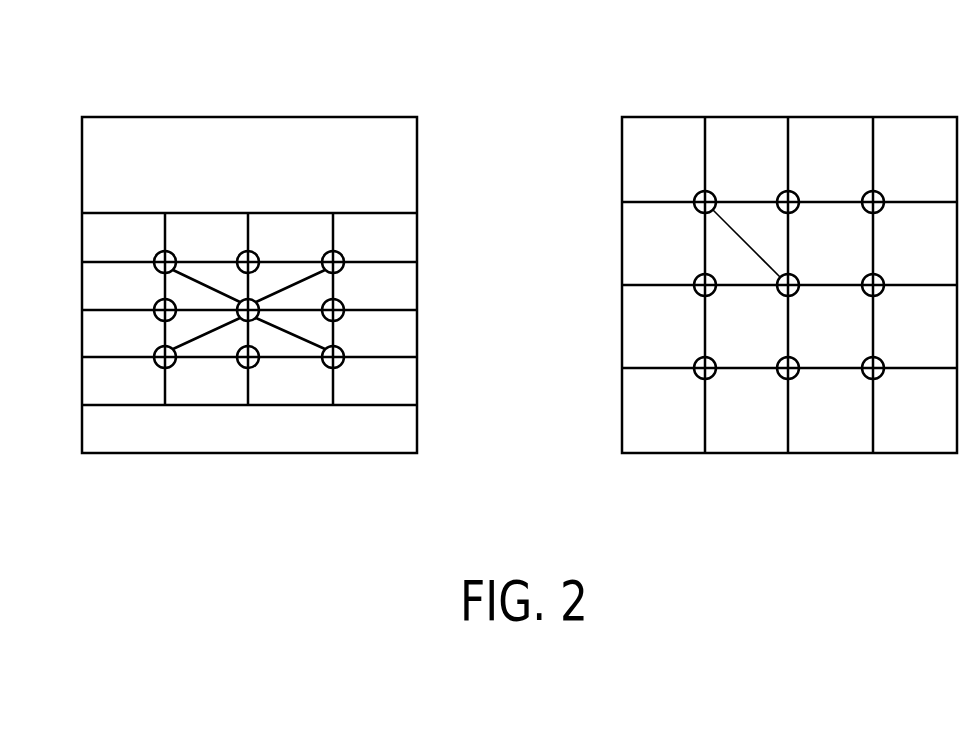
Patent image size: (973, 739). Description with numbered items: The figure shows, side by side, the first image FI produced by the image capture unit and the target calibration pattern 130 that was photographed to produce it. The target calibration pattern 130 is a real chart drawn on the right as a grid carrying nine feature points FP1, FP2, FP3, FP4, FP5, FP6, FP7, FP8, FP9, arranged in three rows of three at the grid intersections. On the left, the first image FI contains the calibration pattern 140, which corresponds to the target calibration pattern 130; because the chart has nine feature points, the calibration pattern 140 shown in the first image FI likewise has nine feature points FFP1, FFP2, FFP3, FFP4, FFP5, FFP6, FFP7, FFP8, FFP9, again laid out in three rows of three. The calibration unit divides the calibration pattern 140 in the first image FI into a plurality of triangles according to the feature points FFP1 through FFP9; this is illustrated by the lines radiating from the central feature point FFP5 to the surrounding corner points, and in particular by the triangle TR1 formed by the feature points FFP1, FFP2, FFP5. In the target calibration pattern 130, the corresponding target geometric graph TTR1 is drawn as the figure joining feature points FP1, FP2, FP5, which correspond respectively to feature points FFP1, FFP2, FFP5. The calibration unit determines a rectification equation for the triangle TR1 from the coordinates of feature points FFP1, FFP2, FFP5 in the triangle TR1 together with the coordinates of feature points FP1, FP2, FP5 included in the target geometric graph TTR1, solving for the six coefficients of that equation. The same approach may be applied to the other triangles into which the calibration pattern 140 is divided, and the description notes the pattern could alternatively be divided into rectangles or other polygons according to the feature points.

The first image FI is at (263, 118).
The calibration pattern 140 is at (308, 213).
The triangle TR1 is at (217, 275).
The target calibration pattern 130 is at (820, 117).
The target geometric graph TTR1 is at (745, 212).
The feature point FFP1 is at (138, 247).
The feature point FFP2 is at (278, 247).
The feature point FFP3 is at (362, 247).
The feature point FFP4 is at (134, 297).
The feature point FFP5 is at (256, 319).
The feature point FFP6 is at (364, 297).
The feature point FFP7 is at (134, 346).
The feature point FFP8 is at (223, 373).
The feature point FFP9 is at (364, 346).
The feature point FP1 is at (683, 215).
The feature point FP2 is at (811, 215).
The feature point FP3 is at (895, 215).
The feature point FP4 is at (728, 299).
The feature point FP5 is at (811, 299).
The feature point FP6 is at (895, 299).
The feature point FP7 is at (728, 382).
The feature point FP8 is at (811, 382).
The feature point FP9 is at (895, 382).